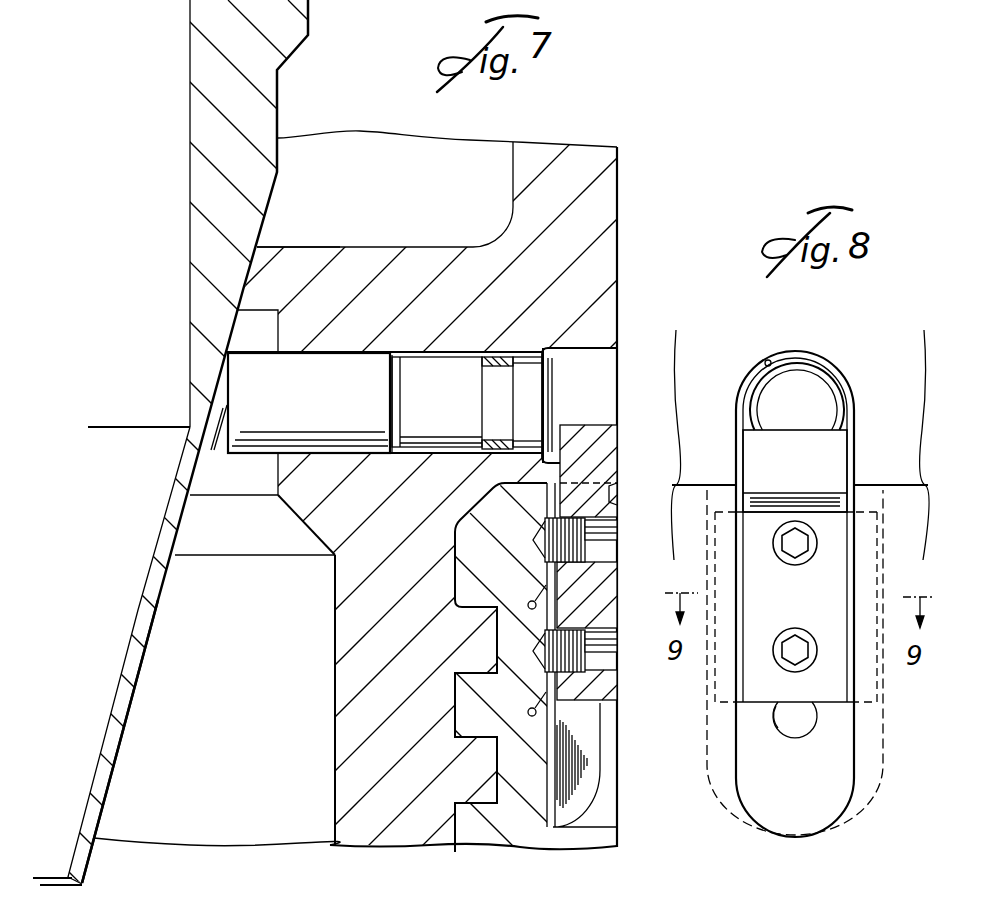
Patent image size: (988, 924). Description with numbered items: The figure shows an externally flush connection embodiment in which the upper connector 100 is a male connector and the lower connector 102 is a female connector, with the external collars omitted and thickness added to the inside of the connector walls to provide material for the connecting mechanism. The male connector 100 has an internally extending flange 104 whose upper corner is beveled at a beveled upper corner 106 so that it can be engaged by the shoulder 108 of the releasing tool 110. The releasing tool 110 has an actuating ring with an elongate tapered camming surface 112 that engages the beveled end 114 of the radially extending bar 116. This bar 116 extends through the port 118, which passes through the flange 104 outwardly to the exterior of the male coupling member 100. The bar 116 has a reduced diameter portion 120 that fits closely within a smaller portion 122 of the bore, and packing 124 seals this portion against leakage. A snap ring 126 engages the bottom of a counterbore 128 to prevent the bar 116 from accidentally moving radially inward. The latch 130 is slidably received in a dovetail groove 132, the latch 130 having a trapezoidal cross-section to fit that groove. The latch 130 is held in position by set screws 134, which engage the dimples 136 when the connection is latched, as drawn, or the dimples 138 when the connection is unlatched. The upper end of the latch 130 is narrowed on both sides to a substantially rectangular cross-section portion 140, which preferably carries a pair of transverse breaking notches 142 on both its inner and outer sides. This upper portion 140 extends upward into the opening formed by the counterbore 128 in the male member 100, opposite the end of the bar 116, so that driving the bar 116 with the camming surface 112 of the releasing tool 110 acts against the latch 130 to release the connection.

In FIG. 7, the upper connector 100 is at (619, 255).
In FIG. 7, the lower connector 102 is at (617, 839).
In FIG. 7, the internally extending flange 104 is at (385, 258).
In FIG. 7, the beveled upper corner 106 is at (318, 275).
In FIG. 7, the shoulder 108 is at (296, 62).
In FIG. 7, the releasing tool 110 is at (198, 131).
In FIG. 7, the elongate tapered camming surface 112 is at (120, 745).
In FIG. 7, the beveled end 114 is at (225, 445).
In FIG. 7, the radially extending bar 116 is at (322, 406).
In FIG. 8, the radially extending bar 116 is at (813, 385).
In FIG. 7, the port 118 is at (391, 372).
In FIG. 7, the reduced diameter portion 120 is at (436, 390).
In FIG. 7, the smaller portion of the bore 122 is at (527, 372).
In FIG. 7, the packing 124 is at (497, 368).
In FIG. 7, the snap ring 126 is at (543, 398).
In FIG. 8, the snap ring 126 is at (805, 353).
In FIG. 7, the counterbore 128 is at (590, 350).
In FIG. 8, the counterbore 128 is at (768, 358).
In FIG. 7, the latch 130 is at (612, 582).
In FIG. 8, the latch 130 is at (810, 600).
In FIG. 7, the dovetail groove 132 is at (547, 766).
In FIG. 8, the dovetail groove 132 is at (850, 753).
In FIG. 7, the set screws 134 is at (615, 540).
In FIG. 7, the dimples 136 is at (530, 535).
In FIG. 7, the dimples 138 is at (528, 595).
In FIG. 8, the dimples 138 is at (787, 722).
In FIG. 7, the rectangular cross-section portion 140 is at (610, 437).
In FIG. 8, the rectangular cross-section portion 140 is at (840, 448).
In FIG. 7, the transverse breaking notches 142 is at (610, 505).
In FIG. 8, the transverse breaking notches 142 is at (777, 498).